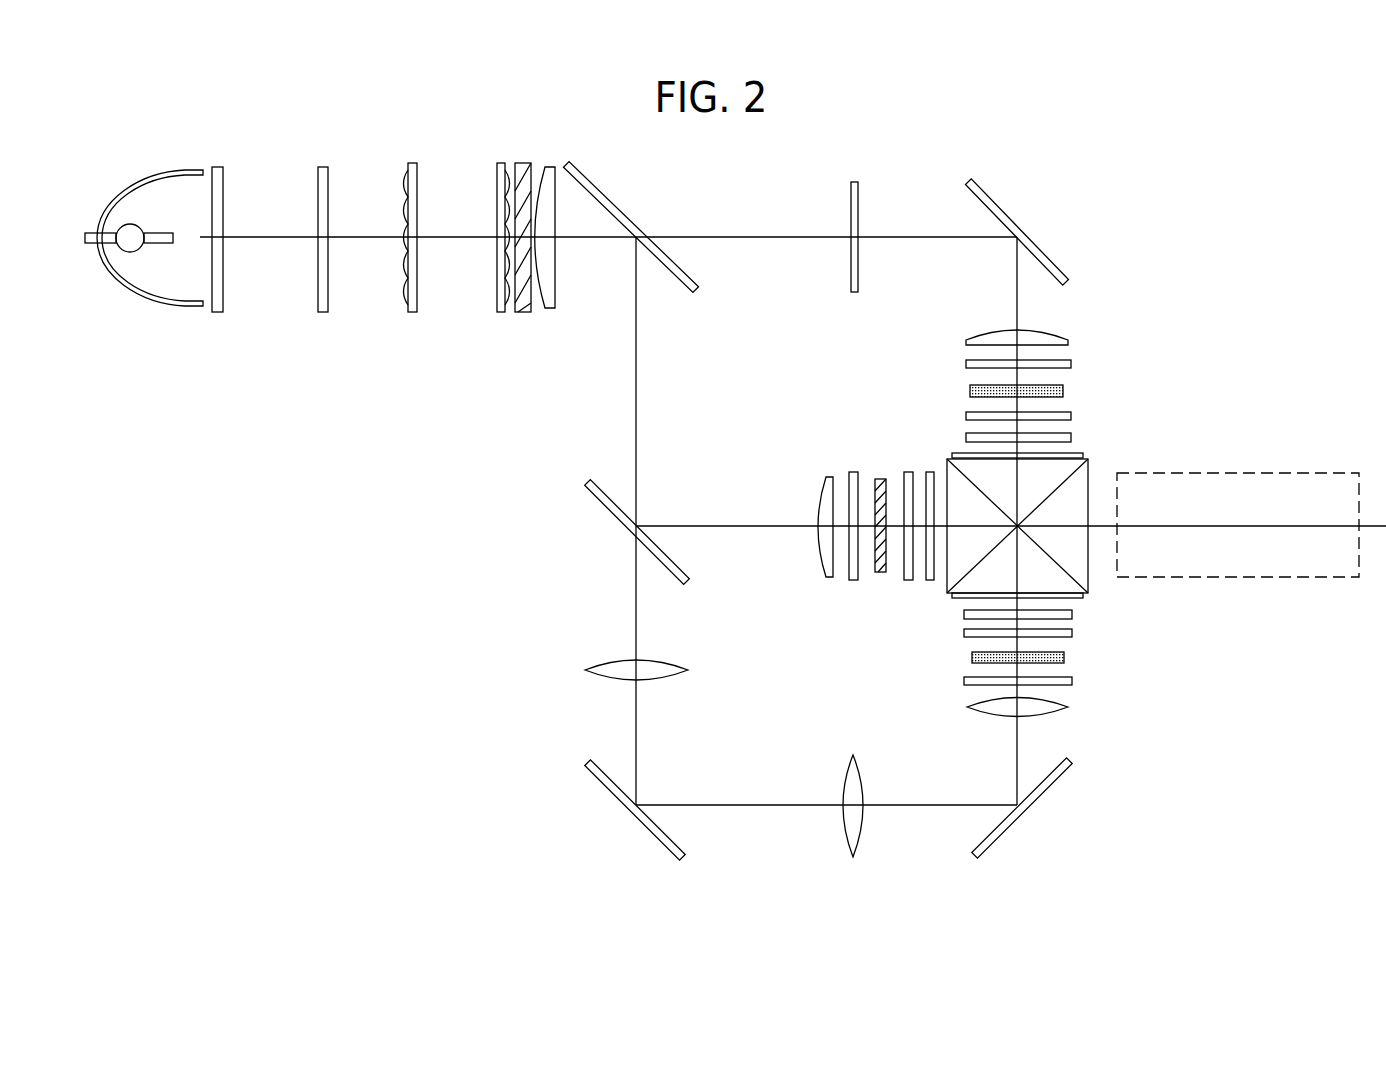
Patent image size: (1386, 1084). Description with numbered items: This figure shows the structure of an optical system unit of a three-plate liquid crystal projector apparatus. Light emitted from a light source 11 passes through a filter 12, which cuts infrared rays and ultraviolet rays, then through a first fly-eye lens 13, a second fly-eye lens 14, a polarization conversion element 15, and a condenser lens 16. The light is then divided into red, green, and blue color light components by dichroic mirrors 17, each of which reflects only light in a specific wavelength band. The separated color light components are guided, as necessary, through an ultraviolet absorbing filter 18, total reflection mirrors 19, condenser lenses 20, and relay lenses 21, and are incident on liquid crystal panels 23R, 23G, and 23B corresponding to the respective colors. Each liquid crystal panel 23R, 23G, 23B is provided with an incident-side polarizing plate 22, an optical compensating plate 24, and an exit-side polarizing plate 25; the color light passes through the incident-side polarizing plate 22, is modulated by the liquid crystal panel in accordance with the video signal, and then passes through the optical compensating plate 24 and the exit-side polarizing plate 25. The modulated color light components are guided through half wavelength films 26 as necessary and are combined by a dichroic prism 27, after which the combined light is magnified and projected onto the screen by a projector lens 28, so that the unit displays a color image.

The light source 11 is at (177, 307).
The filter 12 is at (322, 312).
The first fly-eye lens 13 is at (412, 312).
The second fly-eye lens 14 is at (500, 312).
The polarization conversion element 15 is at (525, 163).
The condenser lens 16 is at (548, 308).
The dichroic mirror 17 is at (610, 195).
The ultraviolet absorbing filter 18 is at (855, 182).
The total reflection mirror 19 is at (1007, 215).
The condenser lens 20 is at (1055, 333).
The relay lens 21 is at (597, 676).
The incident-side polarizing plate 22 is at (1071, 362).
The liquid crystal panel 23B is at (1063, 389).
The liquid crystal panel 23G is at (880, 478).
The liquid crystal panel 23R is at (972, 657).
The optical compensating plate 24 is at (1071, 415).
The exit-side polarizing plate 25 is at (1071, 438).
The half wavelength film 26 is at (955, 455).
The dichroic prism 27 is at (1090, 582).
The projector lens 28 is at (1267, 577).